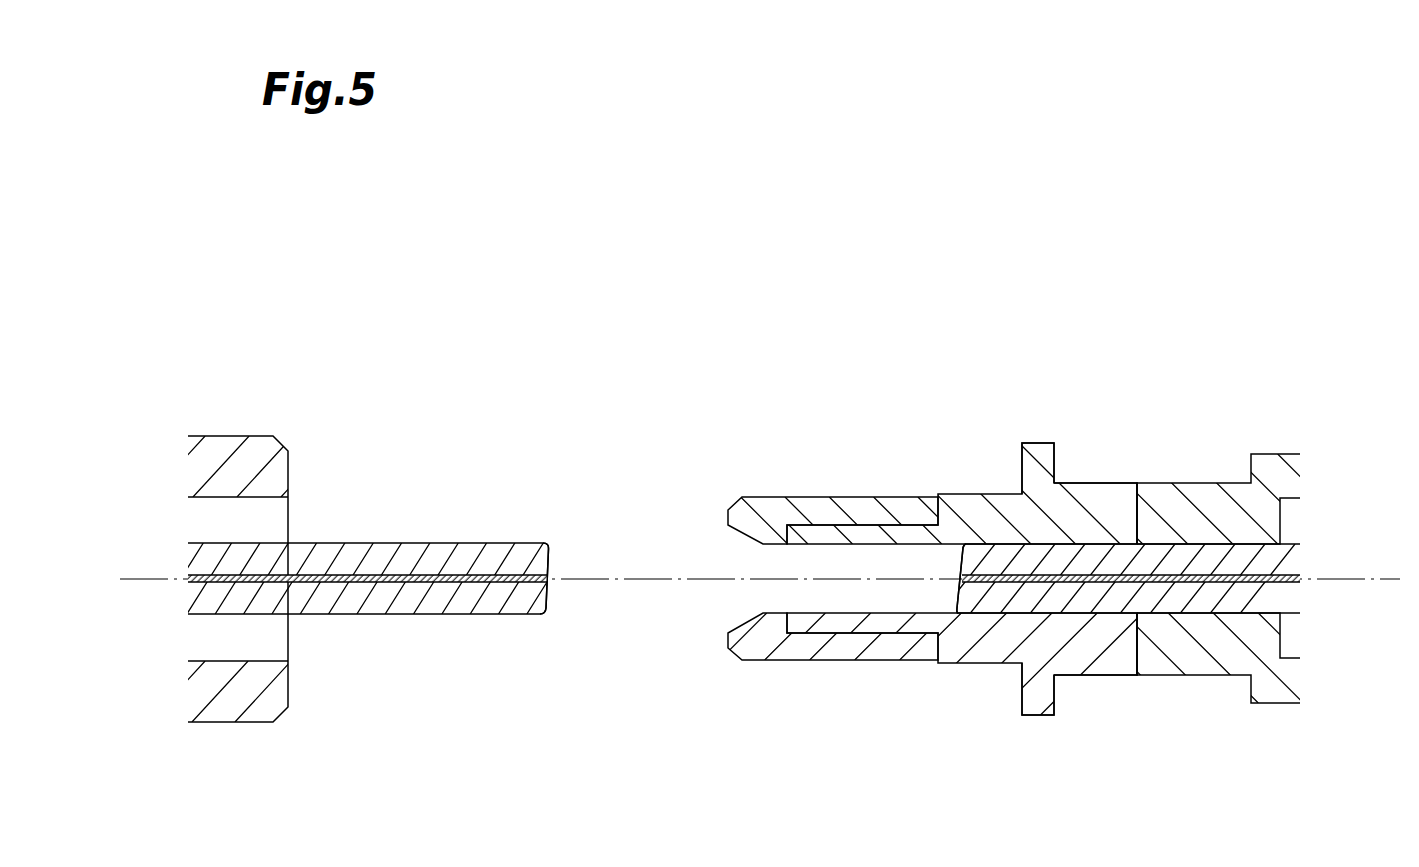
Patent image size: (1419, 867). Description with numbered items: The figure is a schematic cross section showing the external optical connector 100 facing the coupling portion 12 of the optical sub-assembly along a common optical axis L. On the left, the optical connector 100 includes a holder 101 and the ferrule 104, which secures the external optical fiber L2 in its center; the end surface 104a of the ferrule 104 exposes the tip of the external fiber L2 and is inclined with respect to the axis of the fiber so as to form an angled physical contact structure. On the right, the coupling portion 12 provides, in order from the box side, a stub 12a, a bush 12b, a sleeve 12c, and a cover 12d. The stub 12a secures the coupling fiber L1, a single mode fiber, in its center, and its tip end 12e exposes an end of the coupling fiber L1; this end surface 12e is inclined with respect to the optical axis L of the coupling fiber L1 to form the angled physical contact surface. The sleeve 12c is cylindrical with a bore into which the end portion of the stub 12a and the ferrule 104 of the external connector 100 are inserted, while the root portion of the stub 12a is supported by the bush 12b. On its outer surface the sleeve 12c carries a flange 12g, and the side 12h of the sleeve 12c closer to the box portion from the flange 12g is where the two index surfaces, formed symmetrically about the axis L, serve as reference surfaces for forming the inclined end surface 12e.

The external optical connector 100 is at (438, 338).
The holder 101 is at (236, 435).
The ferrule 104 is at (378, 542).
The end surface of the ferrule 104a is at (553, 558).
The external optical fiber L2 is at (447, 588).
The optical axis L is at (667, 581).
The coupling portion 12 is at (1169, 361).
The stub 12a is at (1200, 601).
The bush 12b is at (1190, 499).
The sleeve 12c is at (995, 495).
The cover 12d is at (858, 511).
The tip end (end surface) of the stub 12e is at (958, 565).
The flange 12g is at (1040, 701).
The side of the sleeve closer to the box portion 12h is at (1100, 495).
The coupling fiber L1 is at (1097, 585).